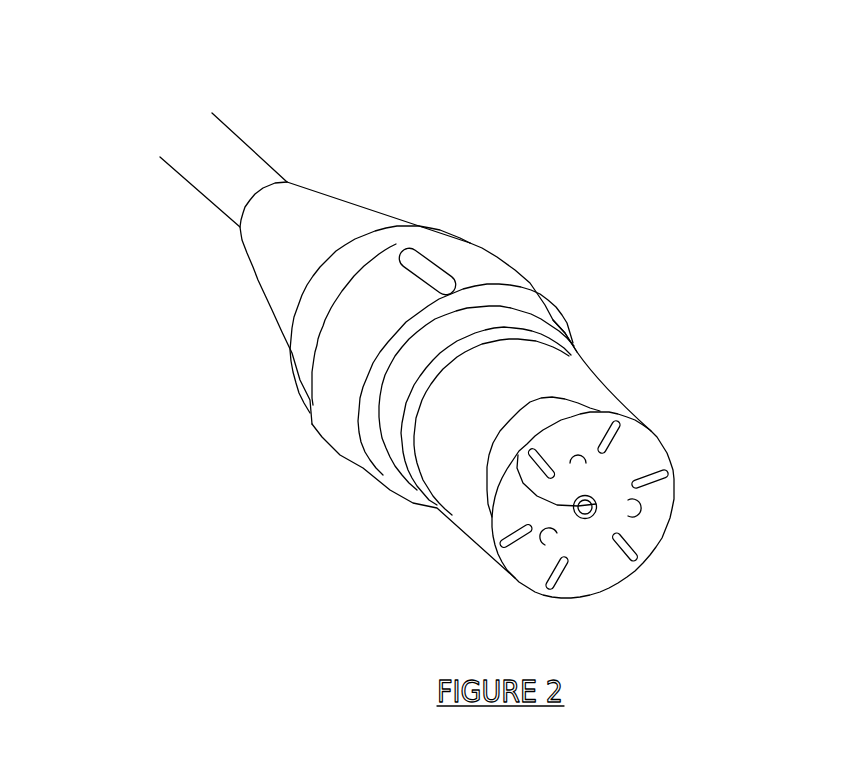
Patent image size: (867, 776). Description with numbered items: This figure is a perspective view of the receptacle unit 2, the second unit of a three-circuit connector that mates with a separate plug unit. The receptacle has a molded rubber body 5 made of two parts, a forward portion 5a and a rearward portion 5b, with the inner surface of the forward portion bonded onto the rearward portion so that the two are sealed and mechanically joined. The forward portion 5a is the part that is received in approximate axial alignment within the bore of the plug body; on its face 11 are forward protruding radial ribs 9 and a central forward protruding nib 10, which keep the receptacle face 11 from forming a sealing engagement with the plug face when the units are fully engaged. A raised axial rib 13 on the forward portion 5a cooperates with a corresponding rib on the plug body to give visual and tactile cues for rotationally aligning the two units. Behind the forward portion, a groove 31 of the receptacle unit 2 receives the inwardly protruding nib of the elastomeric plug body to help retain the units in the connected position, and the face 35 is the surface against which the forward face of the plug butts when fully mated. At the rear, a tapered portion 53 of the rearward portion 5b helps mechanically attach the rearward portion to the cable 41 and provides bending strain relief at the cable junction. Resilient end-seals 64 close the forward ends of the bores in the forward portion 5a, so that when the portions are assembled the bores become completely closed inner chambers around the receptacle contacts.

The receptacle unit 2 is at (770, 399).
The molded rubber body 5 is at (470, 382).
The forward portion 5a is at (493, 618).
The rearward portion 5b is at (240, 378).
The radial ribs 9 is at (618, 442).
The central forward protruding nib 10 is at (596, 508).
The face 11 is at (600, 568).
The raised axial rib 13 is at (428, 262).
The groove 31 is at (490, 337).
The face 35 is at (572, 342).
The cable 41 is at (213, 147).
The tapered portion 53 is at (273, 238).
The resilient end-seals 64 is at (471, 540).